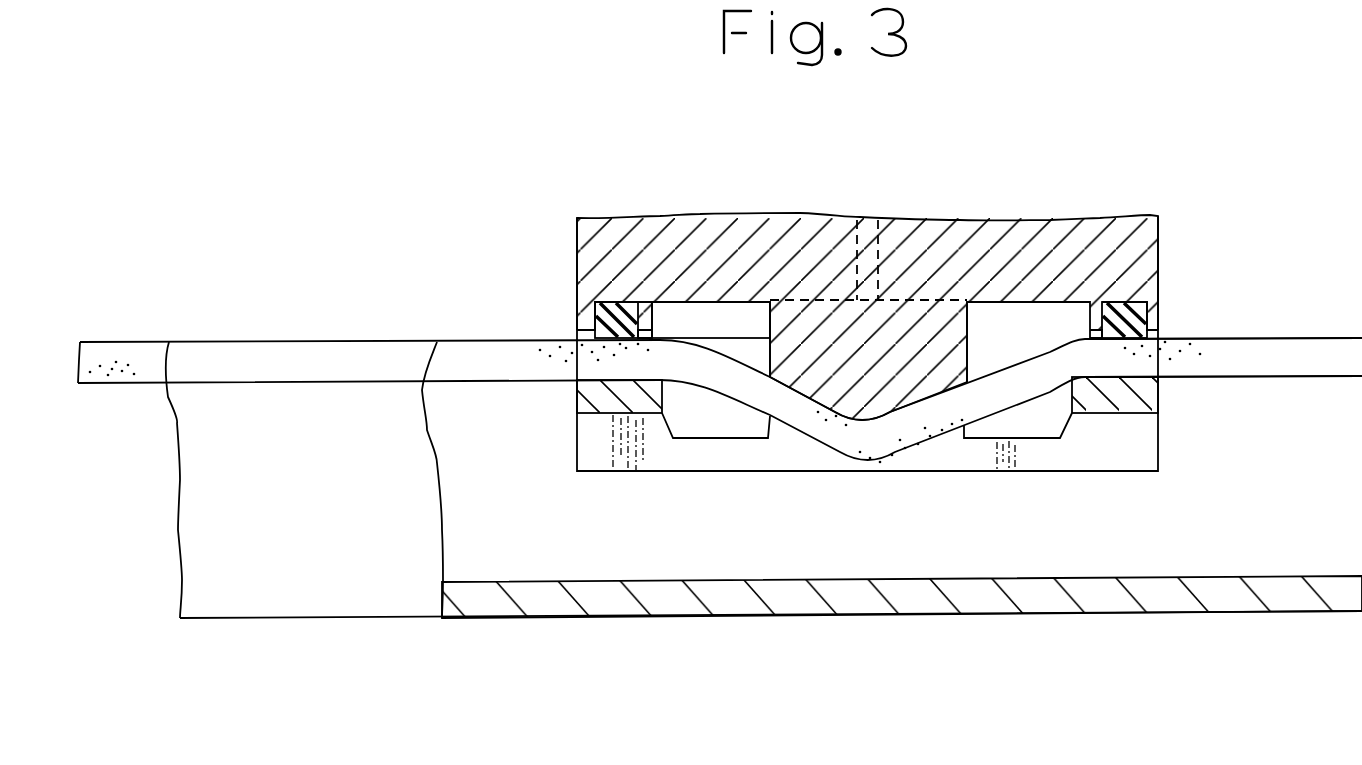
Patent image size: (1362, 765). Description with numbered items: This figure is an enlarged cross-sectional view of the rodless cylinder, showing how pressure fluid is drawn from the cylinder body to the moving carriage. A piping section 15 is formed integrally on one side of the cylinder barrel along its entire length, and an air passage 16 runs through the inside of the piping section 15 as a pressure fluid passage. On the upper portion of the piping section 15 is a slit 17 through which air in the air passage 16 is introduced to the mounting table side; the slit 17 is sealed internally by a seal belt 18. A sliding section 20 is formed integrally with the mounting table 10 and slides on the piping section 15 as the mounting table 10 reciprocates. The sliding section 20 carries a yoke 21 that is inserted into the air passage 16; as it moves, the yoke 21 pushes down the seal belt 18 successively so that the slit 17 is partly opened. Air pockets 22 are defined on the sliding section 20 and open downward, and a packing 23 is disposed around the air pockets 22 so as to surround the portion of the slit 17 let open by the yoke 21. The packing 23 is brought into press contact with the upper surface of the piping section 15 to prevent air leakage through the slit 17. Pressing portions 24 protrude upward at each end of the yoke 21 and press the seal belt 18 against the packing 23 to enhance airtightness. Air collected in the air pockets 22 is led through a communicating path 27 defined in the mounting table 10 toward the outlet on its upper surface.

The mounting table 10 is at (1094, 218).
The piping section 15 is at (385, 602).
The air passage 16 is at (663, 576).
The slit 17 is at (1007, 355).
The seal belt 18 is at (828, 440).
The sliding section 20 is at (583, 259).
The yoke 21 is at (888, 390).
The air pockets 22 is at (702, 305).
The packing 23 is at (598, 320).
The pressing portions 24 is at (590, 392).
The communicating path 27 is at (880, 222).